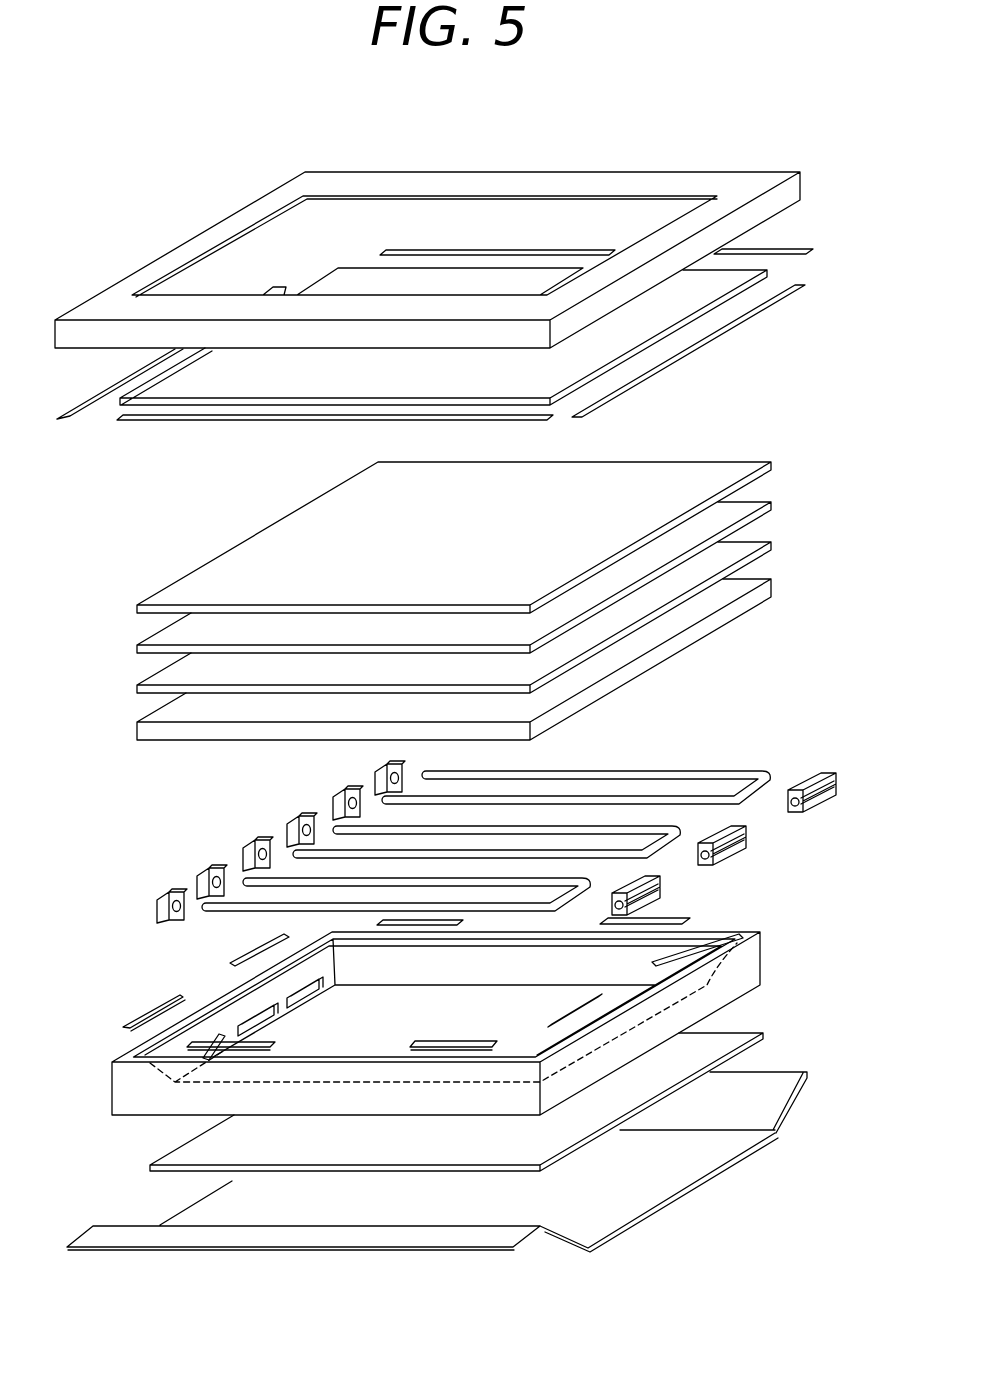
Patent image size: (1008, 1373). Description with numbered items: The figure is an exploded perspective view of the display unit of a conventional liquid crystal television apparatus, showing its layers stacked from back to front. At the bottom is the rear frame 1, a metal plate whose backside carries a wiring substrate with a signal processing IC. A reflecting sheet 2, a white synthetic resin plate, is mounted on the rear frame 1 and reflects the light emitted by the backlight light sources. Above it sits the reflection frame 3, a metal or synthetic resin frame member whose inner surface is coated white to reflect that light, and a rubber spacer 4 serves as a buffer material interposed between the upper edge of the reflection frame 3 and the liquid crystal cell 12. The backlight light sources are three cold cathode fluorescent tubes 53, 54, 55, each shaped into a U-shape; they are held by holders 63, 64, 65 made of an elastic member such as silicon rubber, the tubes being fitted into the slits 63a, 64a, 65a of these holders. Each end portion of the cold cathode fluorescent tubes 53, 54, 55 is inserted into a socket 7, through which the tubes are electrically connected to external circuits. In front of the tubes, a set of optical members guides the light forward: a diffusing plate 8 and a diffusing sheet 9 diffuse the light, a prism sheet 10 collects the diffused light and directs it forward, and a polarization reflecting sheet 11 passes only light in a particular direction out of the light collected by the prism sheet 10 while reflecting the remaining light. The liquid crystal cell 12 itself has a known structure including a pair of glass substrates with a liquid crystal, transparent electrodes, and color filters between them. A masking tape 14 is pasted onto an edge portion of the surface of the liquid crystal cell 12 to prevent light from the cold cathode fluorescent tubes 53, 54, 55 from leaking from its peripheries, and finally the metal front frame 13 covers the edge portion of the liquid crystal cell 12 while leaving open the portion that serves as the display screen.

The rear frame 1 is at (623, 1206).
The reflecting sheet 2 is at (187, 1143).
The reflection frame 3 is at (110, 1094).
The rubber spacer 4 is at (140, 1018).
The socket 7 is at (296, 817).
The diffusing plate 8 is at (138, 736).
The diffusing sheet 9 is at (138, 688).
The prism sheet 10 is at (138, 650).
The polarization reflecting sheet 11 is at (207, 563).
The liquid crystal cell 12 is at (630, 327).
The front frame 13 is at (525, 178).
The masking tape 14 is at (790, 248).
The cold cathode fluorescent tube 53 is at (707, 768).
The cold cathode fluorescent tube 54 is at (545, 824).
The cold cathode fluorescent tube 55 is at (240, 912).
The holder 63 is at (825, 775).
The slit 63a is at (833, 805).
The holder 64 is at (745, 824).
The slit 64a is at (738, 855).
The holder 65 is at (658, 876).
The slit 65a is at (652, 908).